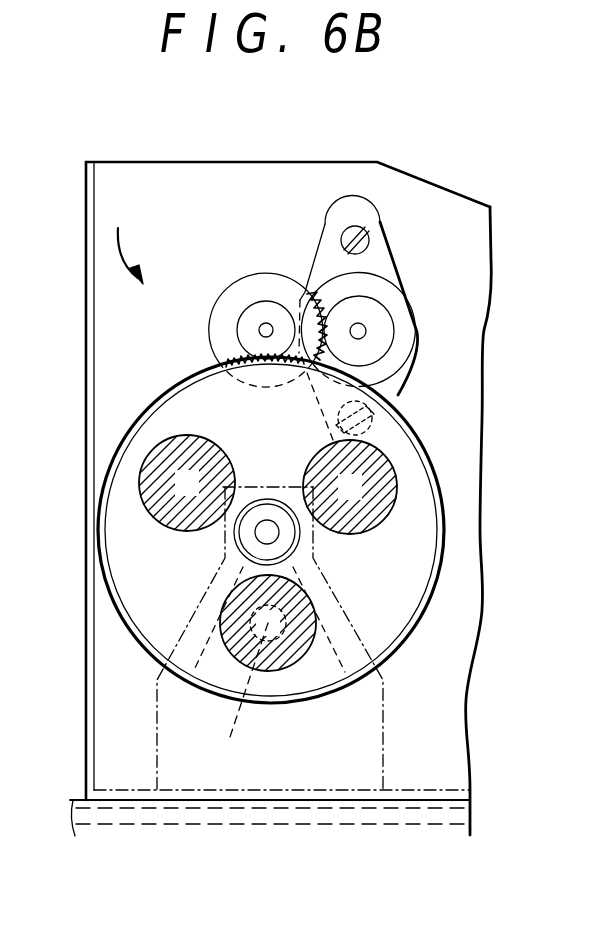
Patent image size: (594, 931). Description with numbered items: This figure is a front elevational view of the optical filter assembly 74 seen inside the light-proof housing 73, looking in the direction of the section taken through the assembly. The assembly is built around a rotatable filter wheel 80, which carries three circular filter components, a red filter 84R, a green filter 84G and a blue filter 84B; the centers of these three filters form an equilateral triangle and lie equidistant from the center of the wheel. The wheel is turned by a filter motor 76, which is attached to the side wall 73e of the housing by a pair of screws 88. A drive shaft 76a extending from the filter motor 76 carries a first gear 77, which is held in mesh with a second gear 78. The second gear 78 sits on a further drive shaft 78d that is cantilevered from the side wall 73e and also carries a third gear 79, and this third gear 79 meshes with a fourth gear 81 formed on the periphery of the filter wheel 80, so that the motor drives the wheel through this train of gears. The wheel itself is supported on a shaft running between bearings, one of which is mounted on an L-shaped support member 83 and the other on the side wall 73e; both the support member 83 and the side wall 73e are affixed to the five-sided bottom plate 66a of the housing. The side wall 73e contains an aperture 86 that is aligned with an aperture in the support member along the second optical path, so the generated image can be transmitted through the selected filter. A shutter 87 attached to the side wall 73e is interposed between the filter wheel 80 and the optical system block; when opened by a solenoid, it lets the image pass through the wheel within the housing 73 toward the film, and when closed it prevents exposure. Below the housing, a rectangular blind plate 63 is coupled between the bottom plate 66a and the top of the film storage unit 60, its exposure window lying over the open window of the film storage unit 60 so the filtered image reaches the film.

The film storage unit 60 is at (266, 814).
The blind plate 63 is at (235, 813).
The bottom plate 66a is at (235, 804).
The light-proof housing 73 is at (467, 475).
The side wall 73e is at (452, 655).
The optical filter assembly 74 is at (126, 237).
The filter motor 76 is at (407, 304).
The drive shaft 76a is at (405, 272).
The first gear 77 is at (400, 350).
The second gear 78 is at (250, 278).
The shaft of drive gear 78d is at (266, 322).
The third gear 79 is at (243, 307).
The filter wheel 80 is at (442, 580).
The fourth gear 81 is at (222, 355).
The L-shaped support member 83 is at (178, 768).
The red filter component 84R is at (207, 445).
The green filter component 84G is at (372, 508).
The blue filter component 84B is at (297, 648).
The aperture 86 is at (241, 697).
The shutter 87 is at (195, 662).
The screws 88 is at (362, 232).